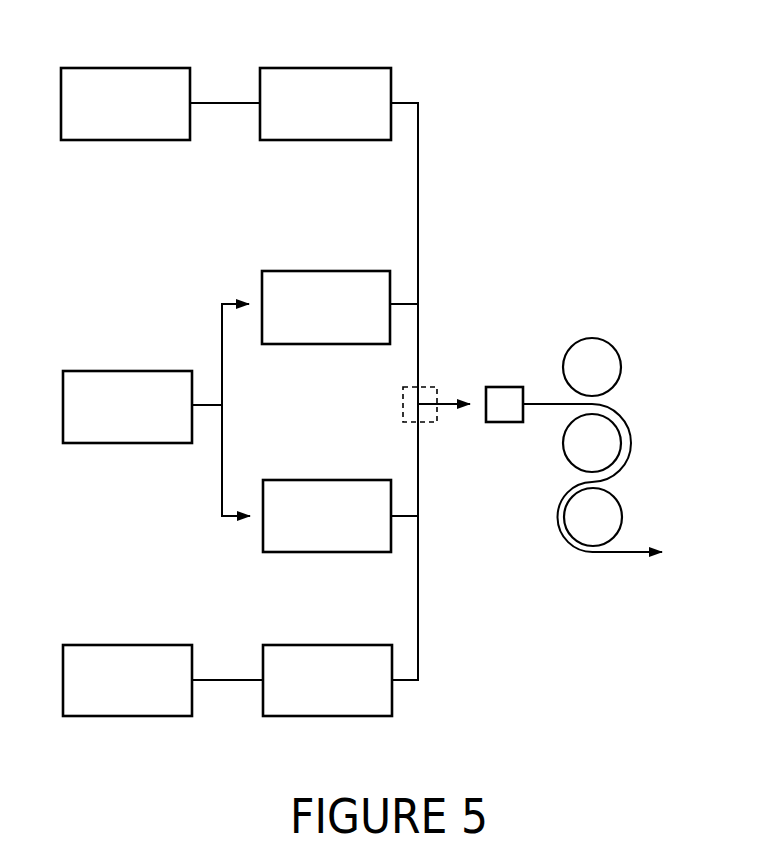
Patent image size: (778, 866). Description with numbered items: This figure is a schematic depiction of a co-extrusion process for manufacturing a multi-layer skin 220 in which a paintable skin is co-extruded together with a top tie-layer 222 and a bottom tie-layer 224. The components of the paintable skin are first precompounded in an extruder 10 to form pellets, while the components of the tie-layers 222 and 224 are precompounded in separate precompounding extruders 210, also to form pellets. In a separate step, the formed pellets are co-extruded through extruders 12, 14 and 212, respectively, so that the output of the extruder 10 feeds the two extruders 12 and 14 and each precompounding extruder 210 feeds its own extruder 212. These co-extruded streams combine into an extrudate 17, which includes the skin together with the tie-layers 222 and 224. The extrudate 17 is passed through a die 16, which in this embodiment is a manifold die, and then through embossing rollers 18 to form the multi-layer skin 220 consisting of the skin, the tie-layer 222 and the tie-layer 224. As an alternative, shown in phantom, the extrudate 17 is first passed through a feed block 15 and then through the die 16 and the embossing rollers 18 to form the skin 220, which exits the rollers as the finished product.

The extruder 10 is at (123, 371).
The extruder 12 is at (333, 271).
The extruder 14 is at (317, 552).
The feed block 15 is at (402, 398).
The die 16 is at (500, 387).
The extrudate 17 is at (452, 405).
The embossing rollers 18 is at (594, 338).
The precompounding extruders 210 is at (120, 68).
The extruder 212 is at (319, 140).
The multi-layer skin 220 is at (635, 552).
The top tie-layer 222 is at (418, 195).
The bottom tie-layer 224 is at (419, 606).